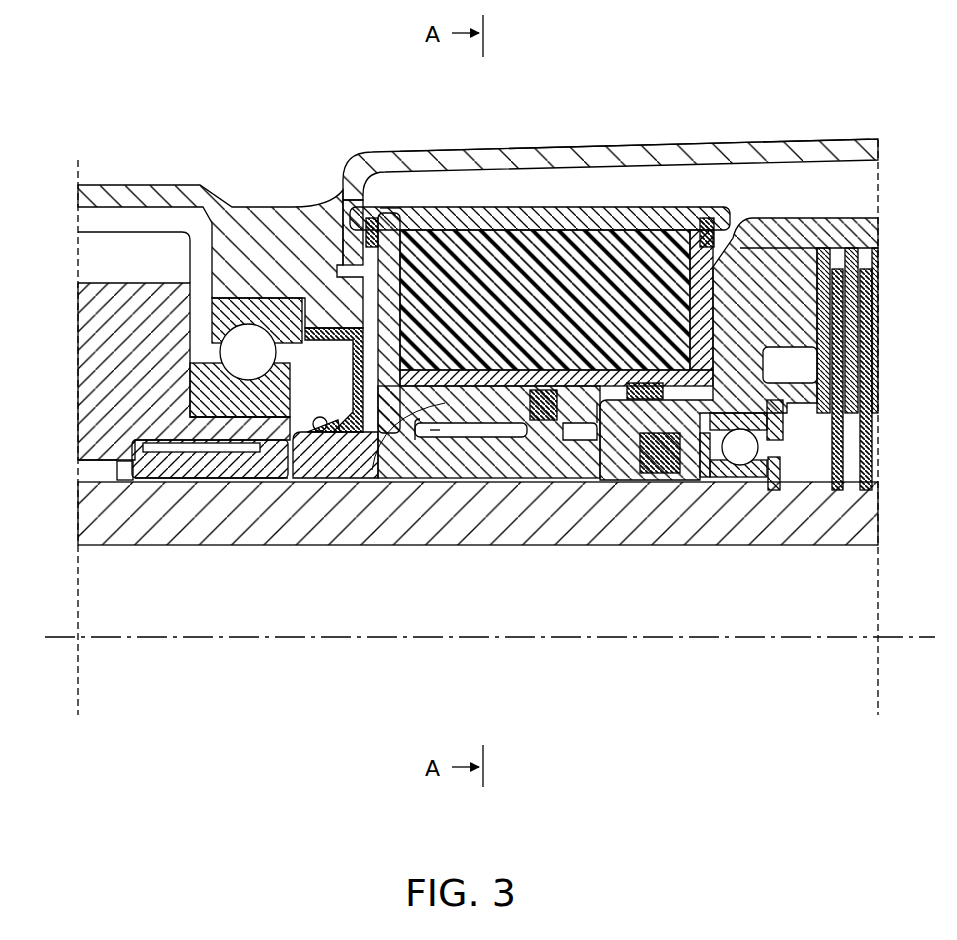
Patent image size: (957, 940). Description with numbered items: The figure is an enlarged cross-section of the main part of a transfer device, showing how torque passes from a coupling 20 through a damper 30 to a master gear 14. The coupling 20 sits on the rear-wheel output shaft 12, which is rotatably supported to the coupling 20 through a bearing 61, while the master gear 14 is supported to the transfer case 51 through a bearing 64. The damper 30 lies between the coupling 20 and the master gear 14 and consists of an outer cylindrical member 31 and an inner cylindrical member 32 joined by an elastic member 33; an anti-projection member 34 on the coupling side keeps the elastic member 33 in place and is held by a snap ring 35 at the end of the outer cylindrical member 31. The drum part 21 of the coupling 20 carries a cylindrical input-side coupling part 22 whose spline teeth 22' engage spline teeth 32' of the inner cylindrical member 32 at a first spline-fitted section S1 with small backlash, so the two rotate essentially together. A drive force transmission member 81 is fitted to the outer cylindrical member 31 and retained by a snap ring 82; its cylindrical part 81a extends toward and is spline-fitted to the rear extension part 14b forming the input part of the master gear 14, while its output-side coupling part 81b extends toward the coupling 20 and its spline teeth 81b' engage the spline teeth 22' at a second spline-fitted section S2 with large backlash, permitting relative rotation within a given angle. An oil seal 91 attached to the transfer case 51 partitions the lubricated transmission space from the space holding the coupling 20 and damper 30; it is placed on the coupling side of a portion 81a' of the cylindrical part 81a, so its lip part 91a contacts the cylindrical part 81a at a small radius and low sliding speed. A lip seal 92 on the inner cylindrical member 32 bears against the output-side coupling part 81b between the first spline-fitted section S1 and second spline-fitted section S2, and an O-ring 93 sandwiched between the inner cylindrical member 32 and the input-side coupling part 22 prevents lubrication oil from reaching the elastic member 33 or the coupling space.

The rear-wheel output shaft 12 is at (100, 518).
The master gear 14 is at (100, 370).
The rear extension part 14b is at (270, 416).
The coupling 20 is at (822, 215).
The drum part 21 is at (772, 240).
The input-side coupling part 22 is at (489, 534).
The spline teeth 22' is at (471, 552).
The damper 30 is at (582, 205).
The outer cylindrical member 31 is at (640, 228).
The inner cylindrical member 32 is at (596, 532).
The spline teeth 32' is at (635, 577).
The elastic member 33 is at (695, 230).
The anti-projection member 34 is at (848, 293).
The snap ring 35 is at (708, 218).
The transfer case 51 is at (456, 150).
The bearing 61 is at (742, 450).
The bearing 64 is at (250, 350).
The drive force transmission member 81 is at (343, 172).
The cylindrical part 81a is at (219, 594).
The portion of the cylindrical part 81a' is at (163, 580).
The output-side coupling part 81b is at (397, 556).
The spline teeth 81b' is at (407, 550).
The snap ring 82 is at (384, 213).
The oil seal 91 is at (350, 335).
The lip part 91a is at (326, 432).
The lip seal 92 is at (540, 345).
The O-ring 93 is at (704, 470).
The first spline-fitted section S1 is at (568, 432).
The second spline-fitted section S2 is at (452, 432).